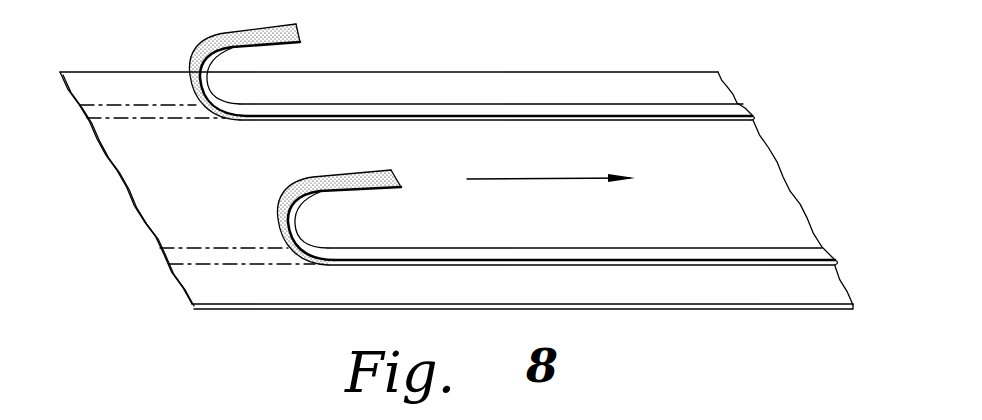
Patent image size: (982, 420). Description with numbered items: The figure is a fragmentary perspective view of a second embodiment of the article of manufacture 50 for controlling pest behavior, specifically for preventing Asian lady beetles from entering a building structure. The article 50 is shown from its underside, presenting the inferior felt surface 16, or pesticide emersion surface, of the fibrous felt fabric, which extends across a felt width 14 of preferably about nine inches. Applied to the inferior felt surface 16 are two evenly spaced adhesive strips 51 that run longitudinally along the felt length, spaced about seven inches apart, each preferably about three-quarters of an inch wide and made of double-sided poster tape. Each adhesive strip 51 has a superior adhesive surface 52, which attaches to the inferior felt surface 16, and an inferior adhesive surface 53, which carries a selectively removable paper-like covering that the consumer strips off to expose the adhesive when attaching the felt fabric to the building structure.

The felt width 14 is at (738, 70).
The inferior felt surface 16 is at (163, 207).
The article of manufacture 50 is at (660, 32).
The adhesive strips 51 is at (686, 117).
The superior adhesive surface 52 is at (218, 35).
The inferior adhesive surface 53 is at (481, 107).